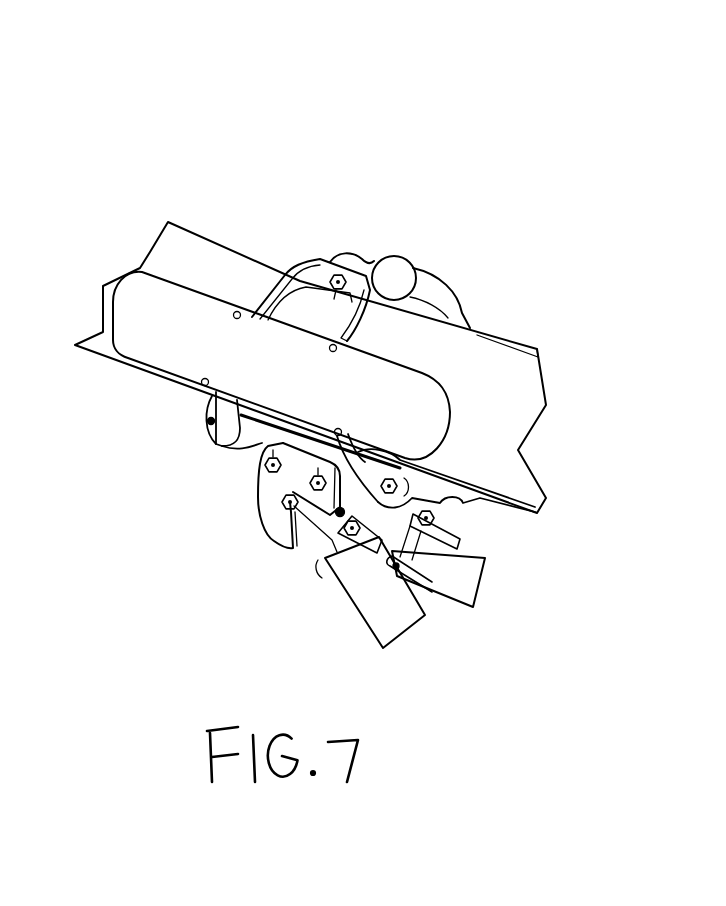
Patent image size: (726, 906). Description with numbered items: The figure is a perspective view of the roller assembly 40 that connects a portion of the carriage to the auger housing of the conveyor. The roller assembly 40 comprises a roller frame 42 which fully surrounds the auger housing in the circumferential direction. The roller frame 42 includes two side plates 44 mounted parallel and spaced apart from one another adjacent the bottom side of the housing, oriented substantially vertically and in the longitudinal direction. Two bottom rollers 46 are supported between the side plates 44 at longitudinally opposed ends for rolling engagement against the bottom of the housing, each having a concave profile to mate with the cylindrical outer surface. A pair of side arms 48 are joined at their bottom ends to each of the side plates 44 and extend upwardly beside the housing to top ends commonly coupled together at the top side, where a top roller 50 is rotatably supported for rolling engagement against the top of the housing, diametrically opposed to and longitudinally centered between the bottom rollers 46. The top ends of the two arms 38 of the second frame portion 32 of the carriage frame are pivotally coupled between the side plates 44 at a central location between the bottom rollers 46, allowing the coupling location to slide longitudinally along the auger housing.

The roller assembly 40 is at (350, 126).
The roller frame 42 is at (281, 278).
The top roller 50 is at (397, 251).
The side arms 48 is at (263, 310).
The bottom rollers 46 is at (216, 445).
The side plates 44 is at (256, 444).
The second frame portion 32 is at (333, 595).
The arms 38 is at (361, 620).